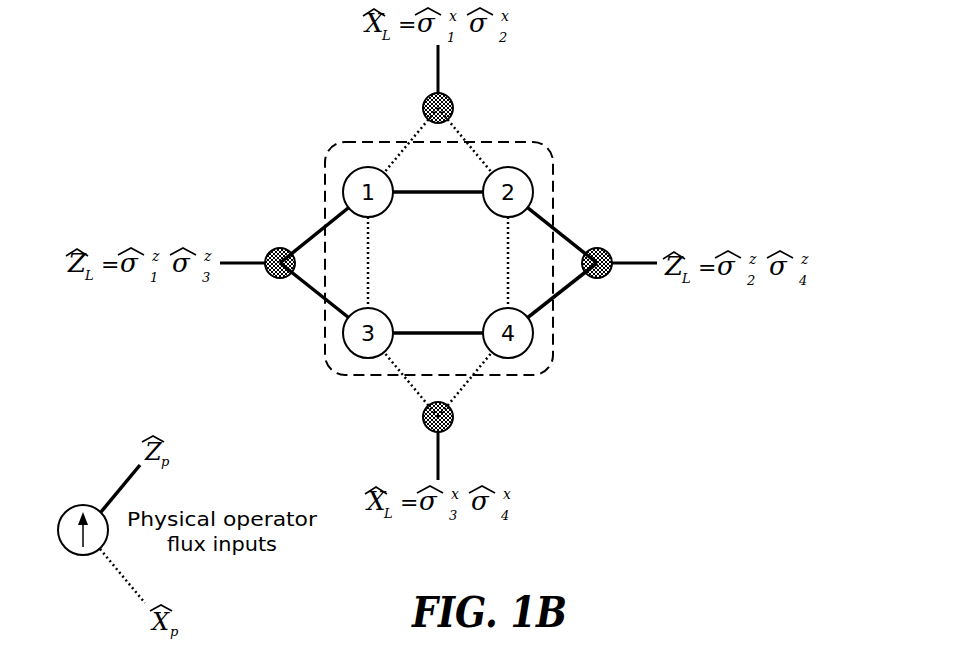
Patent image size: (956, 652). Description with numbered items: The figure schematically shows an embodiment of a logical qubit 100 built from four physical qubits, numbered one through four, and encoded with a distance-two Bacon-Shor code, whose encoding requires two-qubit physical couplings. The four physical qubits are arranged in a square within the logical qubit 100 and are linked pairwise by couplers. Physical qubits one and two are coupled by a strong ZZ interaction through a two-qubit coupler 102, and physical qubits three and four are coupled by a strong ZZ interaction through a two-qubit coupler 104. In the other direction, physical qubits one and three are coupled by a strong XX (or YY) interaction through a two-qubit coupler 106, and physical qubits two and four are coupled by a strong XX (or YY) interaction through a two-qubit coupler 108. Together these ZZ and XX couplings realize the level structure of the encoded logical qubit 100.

The logical qubit 100 is at (370, 142).
The two-qubit coupler 102 is at (443, 190).
The two-qubit coupler 104 is at (418, 336).
The two-qubit coupler 106 is at (368, 258).
The two-qubit coupler 108 is at (510, 243).